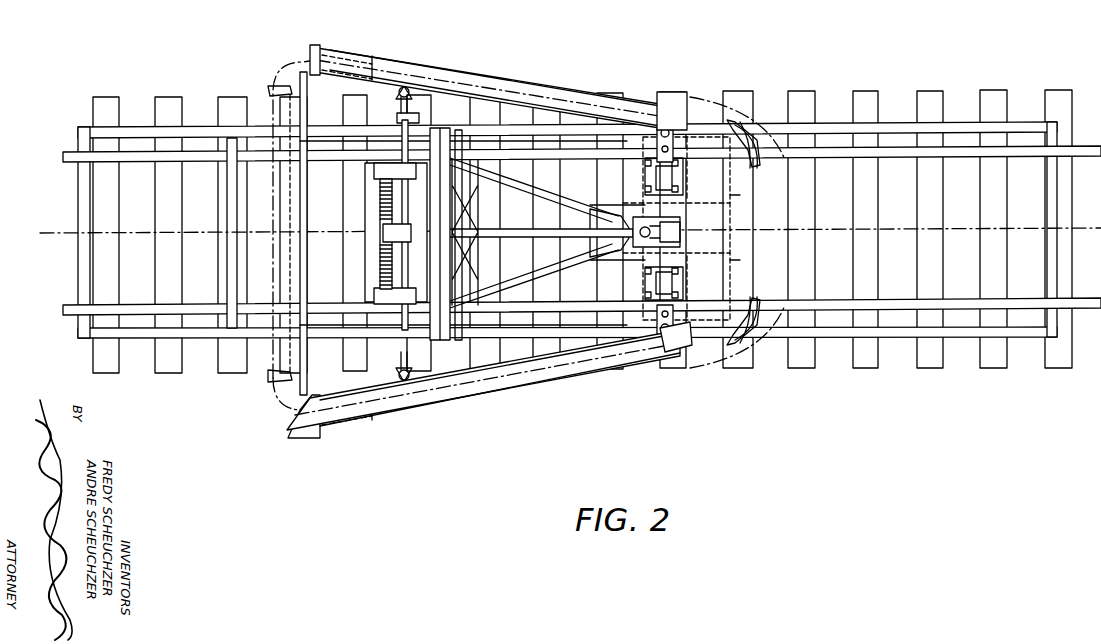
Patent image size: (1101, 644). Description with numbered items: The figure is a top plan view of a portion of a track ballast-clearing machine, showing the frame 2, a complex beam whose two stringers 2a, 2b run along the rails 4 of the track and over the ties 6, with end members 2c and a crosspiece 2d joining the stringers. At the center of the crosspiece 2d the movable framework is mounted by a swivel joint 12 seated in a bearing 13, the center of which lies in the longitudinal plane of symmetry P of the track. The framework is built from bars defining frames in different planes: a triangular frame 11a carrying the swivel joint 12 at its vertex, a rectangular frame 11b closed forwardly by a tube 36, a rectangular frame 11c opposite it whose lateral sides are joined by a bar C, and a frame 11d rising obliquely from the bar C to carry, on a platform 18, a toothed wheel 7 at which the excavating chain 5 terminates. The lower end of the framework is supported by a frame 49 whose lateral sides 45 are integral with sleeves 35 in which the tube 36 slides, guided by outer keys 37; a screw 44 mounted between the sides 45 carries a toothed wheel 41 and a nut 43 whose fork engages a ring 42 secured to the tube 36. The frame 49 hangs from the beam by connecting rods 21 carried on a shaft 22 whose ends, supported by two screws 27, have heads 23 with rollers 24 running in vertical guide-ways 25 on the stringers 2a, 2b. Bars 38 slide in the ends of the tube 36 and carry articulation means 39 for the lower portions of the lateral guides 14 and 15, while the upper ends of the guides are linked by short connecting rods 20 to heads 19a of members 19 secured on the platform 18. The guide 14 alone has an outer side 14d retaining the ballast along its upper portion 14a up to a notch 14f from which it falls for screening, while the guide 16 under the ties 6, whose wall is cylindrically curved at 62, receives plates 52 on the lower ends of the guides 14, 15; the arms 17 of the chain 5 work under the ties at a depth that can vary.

The frame 2 is at (190, 135).
The stringer 2a is at (843, 338).
The stringer 2b is at (888, 122).
The end frame members 2c is at (78, 200).
The crosspiece 2d is at (640, 258).
The rails 4 is at (955, 300).
The excavating chain 5 is at (300, 66).
The ties 6 is at (155, 233).
The wheel 7 is at (700, 185).
The longitudinal plane of symmetry P is at (963, 232).
The bar C is at (620, 192).
The triangular frame 11a is at (545, 258).
The rectangular frame 11b is at (505, 135).
The rectangular frame 11c is at (545, 183).
The frame 11d is at (735, 120).
The swivel joint 12 is at (680, 241).
The bearing 13 is at (680, 225).
The guide 14 is at (525, 393).
The arm portion 14a is at (560, 358).
The outer side 14d is at (455, 414).
The notch 14f is at (642, 366).
The guide 15 is at (500, 75).
The guide 16 is at (290, 432).
The arms 17 is at (318, 48).
The platform 18 is at (740, 195).
The member 19 is at (664, 229).
The head 19a is at (680, 300).
The short connecting rod 20 is at (665, 128).
The connecting rod 21 is at (474, 232).
The shaft 22 is at (500, 208).
The heads 23 is at (516, 288).
The rollers 24 is at (438, 128).
The guide-ways 25 is at (462, 140).
The screws 27 is at (395, 148).
The sleeves 35 is at (380, 305).
The tube 36 is at (368, 270).
The outer keys 37 is at (486, 245).
The bar 38 is at (400, 310).
The articulation means 39 is at (398, 98).
The toothed wheel 41 is at (372, 185).
The ring 42 is at (390, 250).
The nut 43 is at (386, 240).
The screw 44 is at (383, 233).
The lateral sides 45 is at (365, 170).
The frame 49 is at (380, 200).
The plate 52 is at (372, 60).
The cylindrically curved portion 62 is at (310, 78).